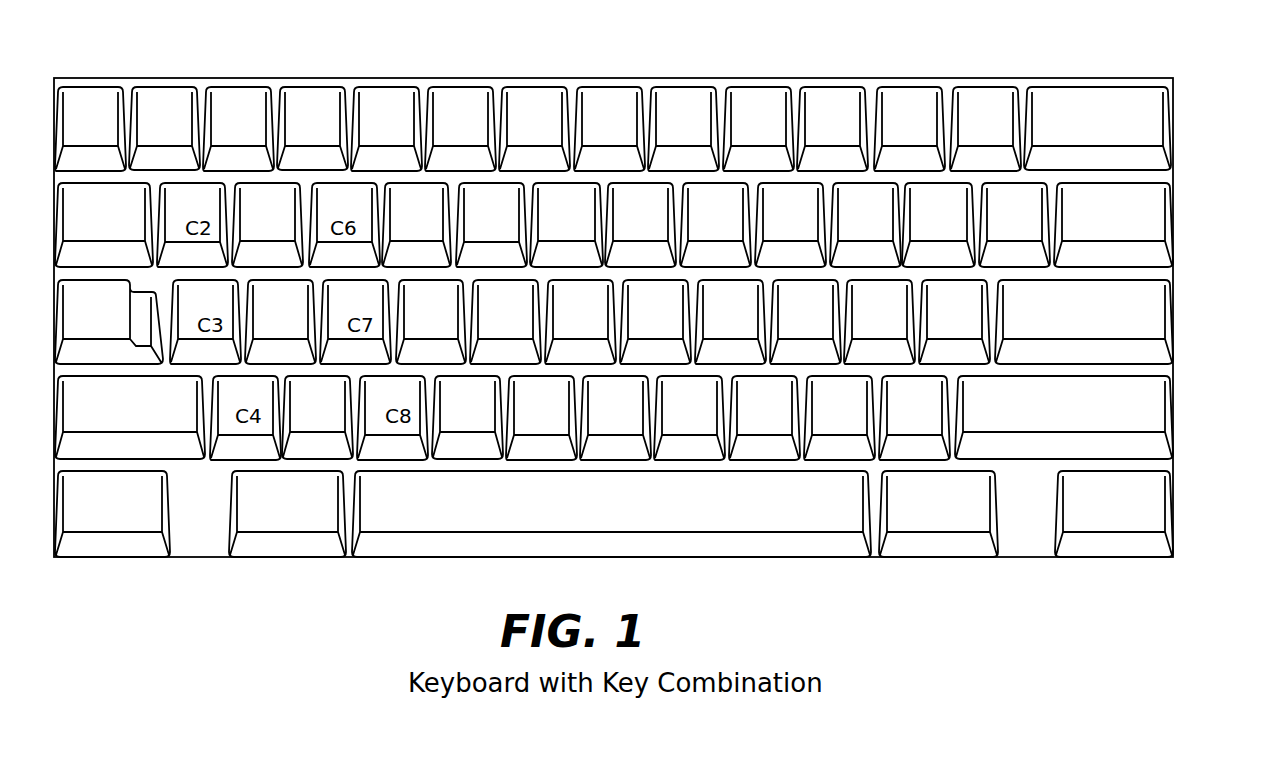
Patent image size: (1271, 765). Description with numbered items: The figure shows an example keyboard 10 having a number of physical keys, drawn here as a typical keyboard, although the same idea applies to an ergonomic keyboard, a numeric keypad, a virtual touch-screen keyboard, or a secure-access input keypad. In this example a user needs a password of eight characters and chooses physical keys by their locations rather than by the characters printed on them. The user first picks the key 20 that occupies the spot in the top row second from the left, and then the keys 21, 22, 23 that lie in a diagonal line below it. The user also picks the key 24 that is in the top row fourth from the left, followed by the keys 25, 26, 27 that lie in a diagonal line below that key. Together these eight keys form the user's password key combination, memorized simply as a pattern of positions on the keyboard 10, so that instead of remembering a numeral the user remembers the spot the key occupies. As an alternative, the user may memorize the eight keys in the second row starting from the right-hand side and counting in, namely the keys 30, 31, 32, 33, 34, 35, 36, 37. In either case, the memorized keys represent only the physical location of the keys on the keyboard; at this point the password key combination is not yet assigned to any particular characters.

The keyboard 10 is at (135, 616).
The physical key 20 is at (168, 107).
The physical key 21 is at (200, 202).
The physical key 22 is at (213, 302).
The physical key 23 is at (252, 397).
The physical key 24 is at (317, 107).
The physical key 25 is at (350, 203).
The physical key 26 is at (363, 300).
The physical key 27 is at (405, 395).
The physical key 30 is at (1142, 212).
The physical key 31 is at (1002, 222).
The physical key 32 is at (926, 222).
The physical key 33 is at (853, 222).
The physical key 34 is at (778, 222).
The physical key 35 is at (703, 222).
The physical key 36 is at (628, 222).
The physical key 37 is at (554, 222).